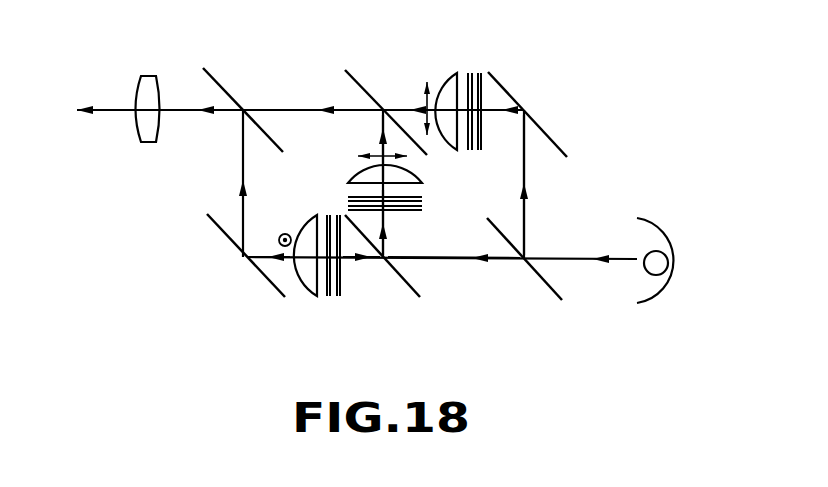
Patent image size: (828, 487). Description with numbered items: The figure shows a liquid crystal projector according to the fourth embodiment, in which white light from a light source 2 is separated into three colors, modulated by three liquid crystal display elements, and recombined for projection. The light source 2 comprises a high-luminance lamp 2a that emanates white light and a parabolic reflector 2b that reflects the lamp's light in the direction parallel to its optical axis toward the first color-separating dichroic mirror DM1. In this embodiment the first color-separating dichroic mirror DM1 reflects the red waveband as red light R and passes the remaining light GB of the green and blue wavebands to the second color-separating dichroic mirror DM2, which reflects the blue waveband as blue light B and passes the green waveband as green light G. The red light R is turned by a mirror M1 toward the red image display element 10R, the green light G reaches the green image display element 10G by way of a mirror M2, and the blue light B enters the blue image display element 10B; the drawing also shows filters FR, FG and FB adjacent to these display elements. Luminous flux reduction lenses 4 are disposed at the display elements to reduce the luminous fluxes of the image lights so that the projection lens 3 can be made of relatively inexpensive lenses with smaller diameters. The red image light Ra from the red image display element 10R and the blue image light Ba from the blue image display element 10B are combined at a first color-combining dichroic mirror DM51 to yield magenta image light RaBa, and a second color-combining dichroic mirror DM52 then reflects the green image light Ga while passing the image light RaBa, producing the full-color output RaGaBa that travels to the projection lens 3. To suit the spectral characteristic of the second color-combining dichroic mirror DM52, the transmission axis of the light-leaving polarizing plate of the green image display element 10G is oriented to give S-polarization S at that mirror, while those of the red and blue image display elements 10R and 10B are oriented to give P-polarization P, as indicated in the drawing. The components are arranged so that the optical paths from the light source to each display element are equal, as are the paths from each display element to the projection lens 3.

The light source 2 is at (660, 220).
The high-luminance lamp 2a is at (647, 253).
The reflector 2b is at (663, 295).
The projection lens 3 is at (142, 130).
The luminous flux reduction lens 4 is at (448, 87).
The red image display element 10R is at (472, 72).
The green image display element 10G is at (328, 300).
The blue image display element 10B is at (347, 195).
The first color-separating dichroic mirror DM1 is at (550, 285).
The second color-separating dichroic mirror DM2 is at (425, 292).
The first color-combining dichroic mirror DM51 is at (348, 72).
The second color-combining dichroic mirror DM52 is at (220, 83).
The mirror M1 is at (540, 125).
The mirror M2 is at (220, 230).
The red filter FR is at (482, 122).
The green filter FG is at (342, 283).
The blue filter FB is at (420, 208).
The S-polarization S is at (280, 235).
The P-polarization P is at (422, 98).
The red light R is at (525, 212).
The green light G is at (373, 262).
The blue light B is at (388, 240).
The red image light Ra is at (385, 107).
The blue image light Ba is at (383, 125).
The green image light Ga is at (255, 267).
The magenta image light RaBa is at (297, 107).
The light of the green and blue wavebands GB is at (458, 262).
The combined color light RaGaBa is at (178, 108).